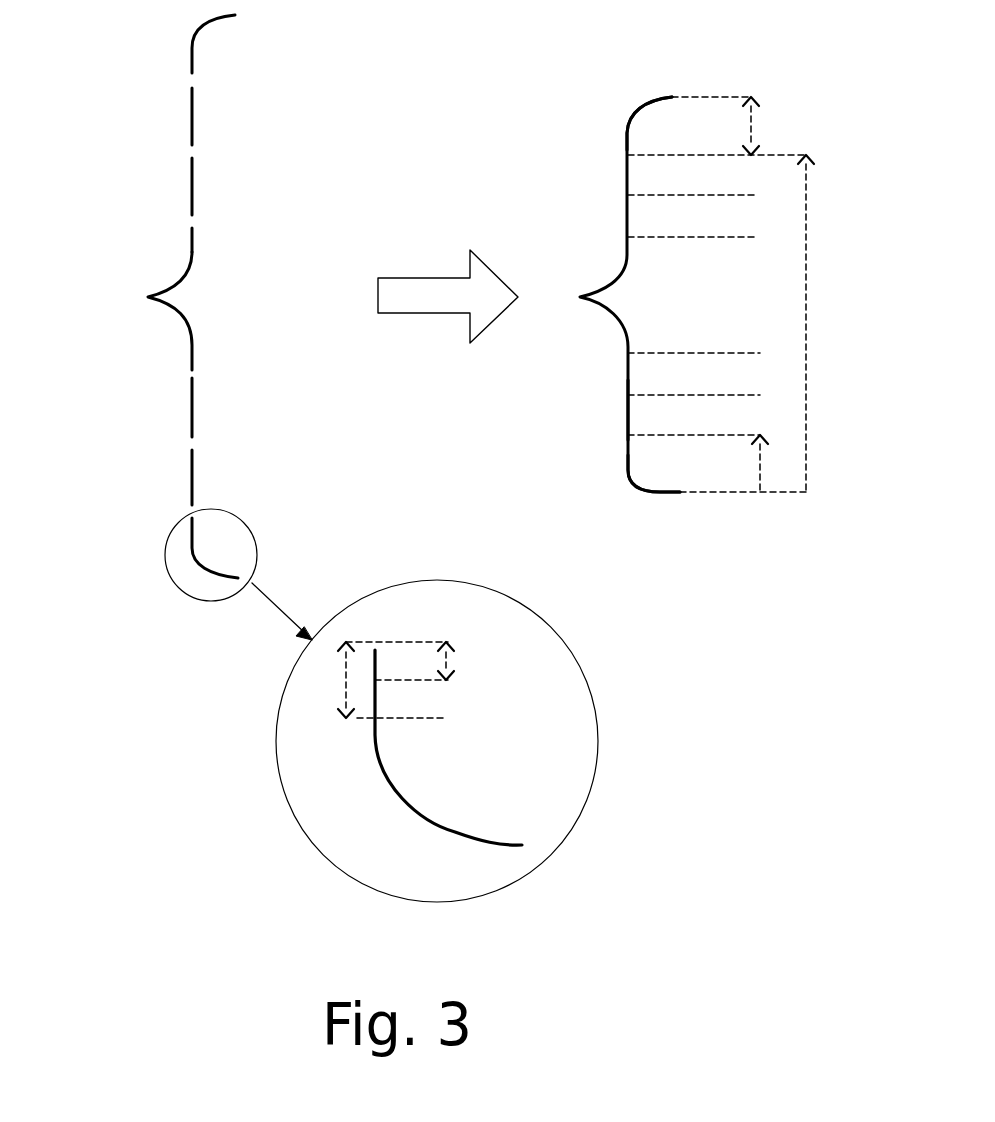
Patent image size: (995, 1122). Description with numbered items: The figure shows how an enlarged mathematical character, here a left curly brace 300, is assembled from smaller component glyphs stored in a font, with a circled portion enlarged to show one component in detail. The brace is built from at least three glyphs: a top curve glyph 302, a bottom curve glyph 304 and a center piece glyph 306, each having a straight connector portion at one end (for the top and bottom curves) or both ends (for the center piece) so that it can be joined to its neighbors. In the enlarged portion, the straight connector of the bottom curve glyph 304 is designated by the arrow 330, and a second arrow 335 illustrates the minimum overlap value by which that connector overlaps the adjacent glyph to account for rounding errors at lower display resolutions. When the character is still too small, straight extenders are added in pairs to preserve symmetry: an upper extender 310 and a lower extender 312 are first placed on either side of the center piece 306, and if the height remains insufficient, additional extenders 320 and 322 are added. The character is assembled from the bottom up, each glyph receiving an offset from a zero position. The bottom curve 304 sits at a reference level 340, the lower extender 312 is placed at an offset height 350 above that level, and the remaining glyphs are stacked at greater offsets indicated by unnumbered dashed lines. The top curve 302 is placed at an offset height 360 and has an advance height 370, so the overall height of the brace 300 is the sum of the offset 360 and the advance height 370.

The left curly brace 300 is at (585, 213).
The top curve glyph 302 is at (190, 48).
The bottom curve glyph 304 is at (195, 561).
The center piece glyph 306 is at (172, 312).
The upper extender 310 is at (190, 112).
The lower extender 312 is at (190, 487).
The additional extender 320 is at (190, 182).
The additional extender 322 is at (190, 415).
The connector 330 is at (340, 688).
The minimum overlap value 335 is at (452, 665).
The reference level 340 is at (733, 493).
The offset height 350 is at (762, 460).
The offset height 360 is at (806, 320).
The advance height 370 is at (752, 127).